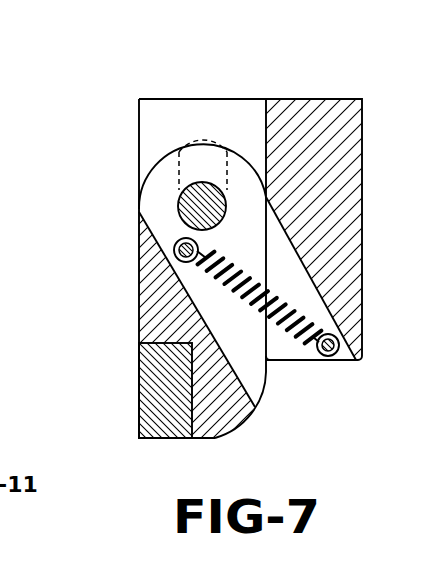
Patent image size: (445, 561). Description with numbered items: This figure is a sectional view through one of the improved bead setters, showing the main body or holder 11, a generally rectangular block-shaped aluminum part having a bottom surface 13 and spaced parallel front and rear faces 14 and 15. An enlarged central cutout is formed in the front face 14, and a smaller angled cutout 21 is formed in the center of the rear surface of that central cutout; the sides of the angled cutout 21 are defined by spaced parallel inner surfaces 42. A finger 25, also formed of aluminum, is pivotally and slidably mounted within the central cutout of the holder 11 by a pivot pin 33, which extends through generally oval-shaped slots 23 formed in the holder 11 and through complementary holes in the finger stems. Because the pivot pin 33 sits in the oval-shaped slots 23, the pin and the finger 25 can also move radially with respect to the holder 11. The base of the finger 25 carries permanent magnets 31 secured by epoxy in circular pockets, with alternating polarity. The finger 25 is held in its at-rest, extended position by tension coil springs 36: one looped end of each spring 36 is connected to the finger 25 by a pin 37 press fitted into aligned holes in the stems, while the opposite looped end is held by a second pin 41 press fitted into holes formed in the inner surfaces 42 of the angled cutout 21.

The main body or holder 11 is at (326, 92).
The bottom surface 13 is at (338, 363).
The front face 14 is at (139, 164).
The rear face 15 is at (362, 183).
The angled cutout 21 is at (324, 302).
The oval-shaped slots 23 is at (227, 186).
The finger 25 is at (129, 321).
The permanent magnets 31 is at (140, 401).
The pivot pin 33 is at (188, 208).
The tension coil springs 36 is at (174, 287).
The pin 37 is at (174, 252).
The second pin 41 is at (321, 360).
The inner surfaces 42 is at (287, 258).